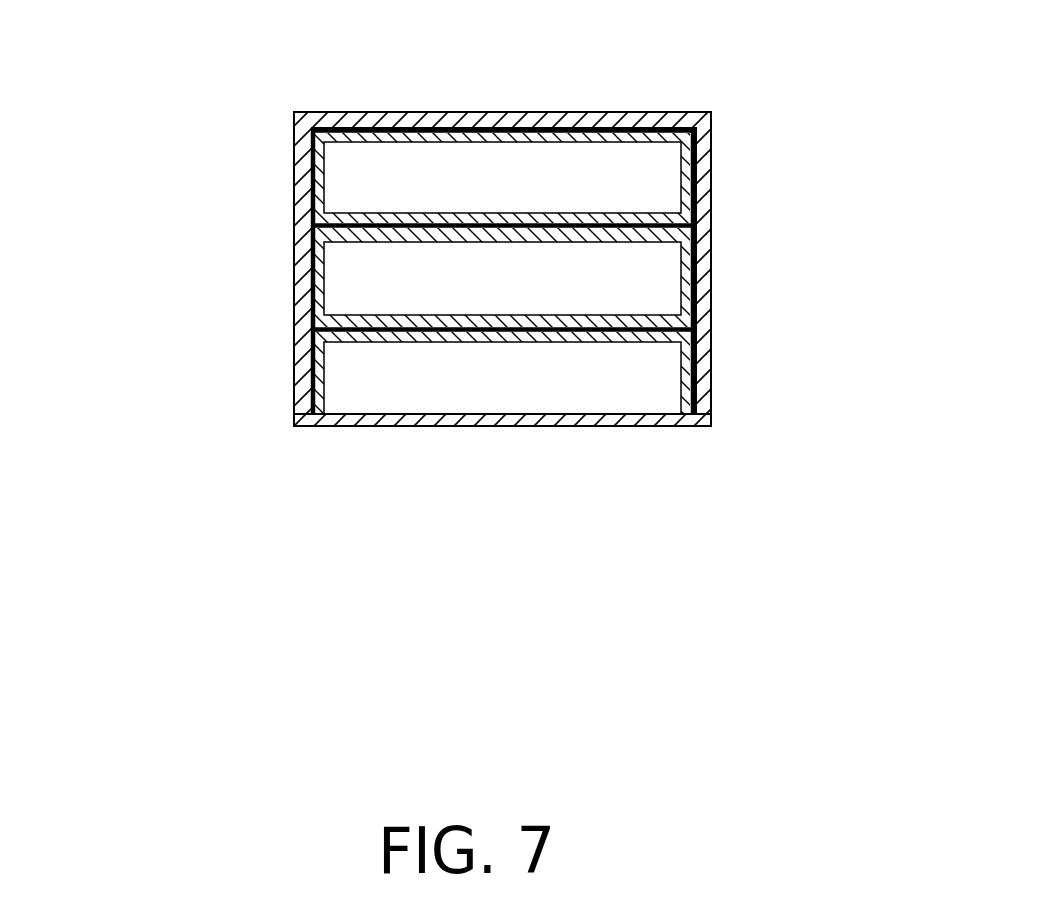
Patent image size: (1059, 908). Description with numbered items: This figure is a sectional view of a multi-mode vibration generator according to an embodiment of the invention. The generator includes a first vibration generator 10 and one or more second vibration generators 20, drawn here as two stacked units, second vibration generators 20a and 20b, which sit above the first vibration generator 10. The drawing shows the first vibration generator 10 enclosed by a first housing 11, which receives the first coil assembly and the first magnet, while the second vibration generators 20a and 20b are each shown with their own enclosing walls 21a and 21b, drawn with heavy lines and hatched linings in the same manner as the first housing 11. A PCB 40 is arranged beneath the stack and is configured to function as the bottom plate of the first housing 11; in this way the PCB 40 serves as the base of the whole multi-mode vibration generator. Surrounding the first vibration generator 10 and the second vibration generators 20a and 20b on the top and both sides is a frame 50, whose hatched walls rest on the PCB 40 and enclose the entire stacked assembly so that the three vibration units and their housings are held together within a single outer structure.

The frame 50 is at (667, 112).
The PCB 40 is at (582, 427).
The case of second cell 21b is at (693, 160).
The case of first cell 21a is at (685, 262).
The first housing 11 is at (687, 355).
The second vibration generator 20b is at (340, 182).
The second vibration generator 20a is at (342, 285).
The second vibration generator 20 is at (112, 145).
The first vibration generator 10 is at (343, 387).